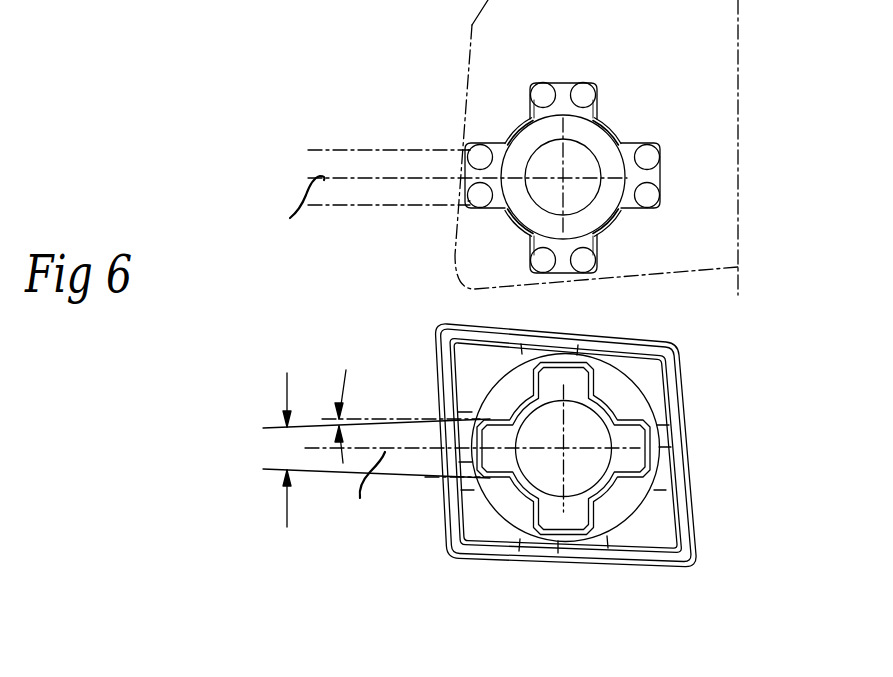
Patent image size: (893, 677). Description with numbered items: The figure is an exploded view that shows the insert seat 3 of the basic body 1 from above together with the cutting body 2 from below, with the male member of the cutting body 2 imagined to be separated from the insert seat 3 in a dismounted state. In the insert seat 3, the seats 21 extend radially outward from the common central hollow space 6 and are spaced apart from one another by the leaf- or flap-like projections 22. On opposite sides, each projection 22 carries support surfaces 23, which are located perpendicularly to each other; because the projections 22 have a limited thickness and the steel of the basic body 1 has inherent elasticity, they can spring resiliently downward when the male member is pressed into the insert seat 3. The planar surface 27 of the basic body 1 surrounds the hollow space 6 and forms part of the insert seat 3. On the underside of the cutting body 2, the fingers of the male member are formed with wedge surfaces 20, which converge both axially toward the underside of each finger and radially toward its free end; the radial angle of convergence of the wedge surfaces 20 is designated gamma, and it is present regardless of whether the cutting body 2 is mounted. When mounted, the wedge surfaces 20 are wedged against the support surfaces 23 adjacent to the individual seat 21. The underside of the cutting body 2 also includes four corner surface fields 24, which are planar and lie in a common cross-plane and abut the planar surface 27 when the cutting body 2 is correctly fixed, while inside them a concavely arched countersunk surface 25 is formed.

The basic body 1 is at (468, 57).
The cutting body 2 is at (705, 450).
The insert seat 3 is at (628, 222).
The hollow space 6 is at (583, 167).
The wedge surfaces 20 is at (498, 420).
The seats 21 is at (475, 180).
The projections 22 is at (522, 131).
The support surfaces 23 is at (502, 148).
The corner surface fields 24 is at (655, 375).
The countersunk surface 25 is at (620, 523).
The planar surface 27 is at (642, 48).